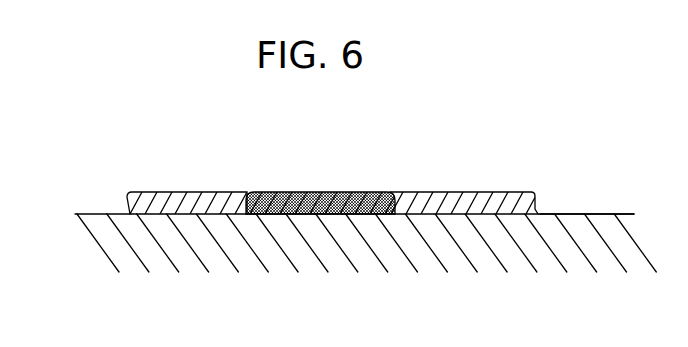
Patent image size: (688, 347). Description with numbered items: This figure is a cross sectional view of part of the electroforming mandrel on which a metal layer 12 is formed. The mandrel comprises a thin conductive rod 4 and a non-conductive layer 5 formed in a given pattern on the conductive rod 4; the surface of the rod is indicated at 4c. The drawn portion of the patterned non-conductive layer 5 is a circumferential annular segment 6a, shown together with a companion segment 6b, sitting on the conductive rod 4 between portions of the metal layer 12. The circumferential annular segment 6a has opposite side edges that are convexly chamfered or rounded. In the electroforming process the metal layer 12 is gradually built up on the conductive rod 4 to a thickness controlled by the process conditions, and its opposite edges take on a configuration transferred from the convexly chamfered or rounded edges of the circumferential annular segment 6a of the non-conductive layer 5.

The conductive rod 4 is at (117, 247).
The substrate surface 4c is at (577, 212).
The metal layer 12 is at (168, 191).
The non-conductive layer 5 is at (337, 179).
The circumferential annular segment 6a is at (316, 203).
The second layer 6b is at (343, 192).